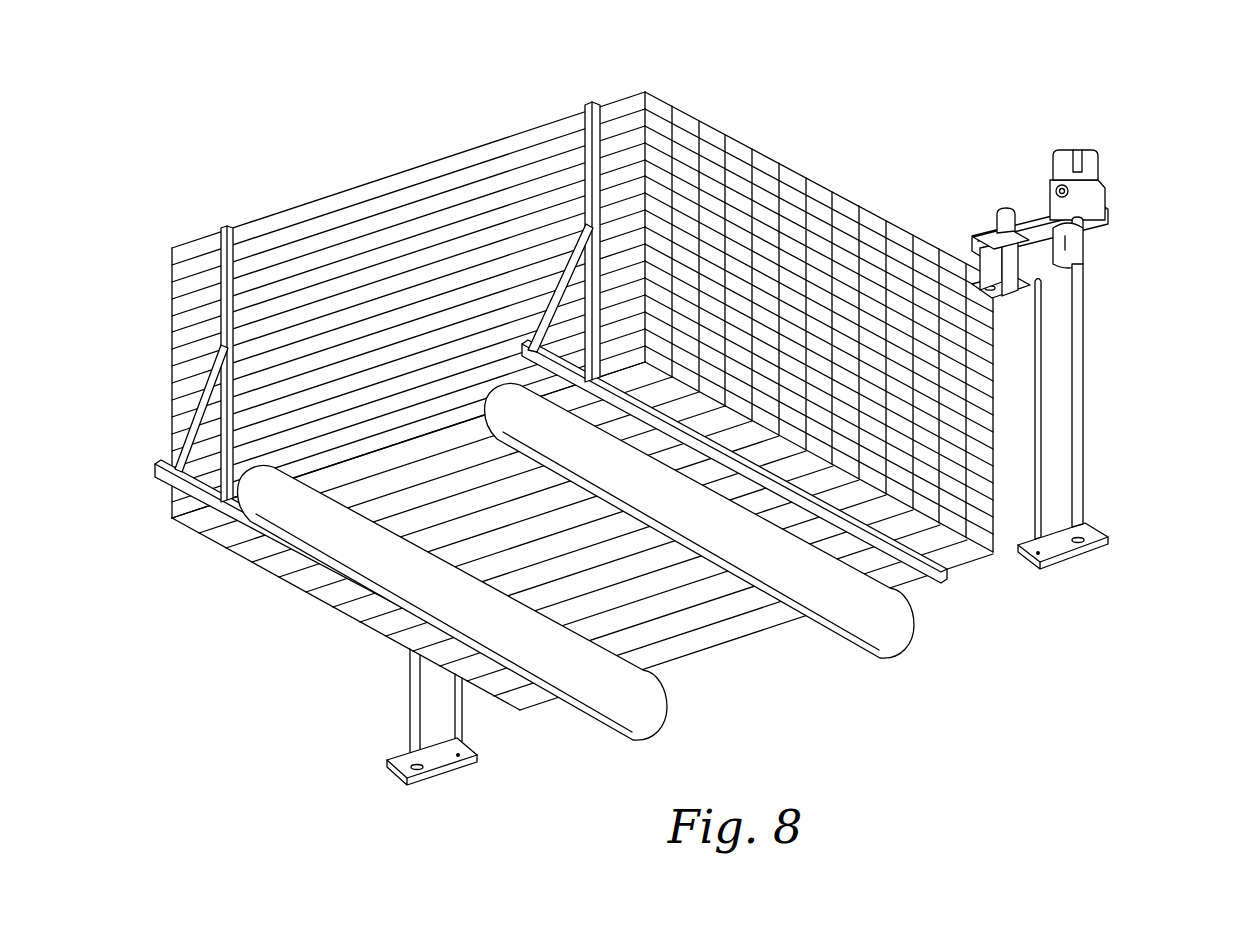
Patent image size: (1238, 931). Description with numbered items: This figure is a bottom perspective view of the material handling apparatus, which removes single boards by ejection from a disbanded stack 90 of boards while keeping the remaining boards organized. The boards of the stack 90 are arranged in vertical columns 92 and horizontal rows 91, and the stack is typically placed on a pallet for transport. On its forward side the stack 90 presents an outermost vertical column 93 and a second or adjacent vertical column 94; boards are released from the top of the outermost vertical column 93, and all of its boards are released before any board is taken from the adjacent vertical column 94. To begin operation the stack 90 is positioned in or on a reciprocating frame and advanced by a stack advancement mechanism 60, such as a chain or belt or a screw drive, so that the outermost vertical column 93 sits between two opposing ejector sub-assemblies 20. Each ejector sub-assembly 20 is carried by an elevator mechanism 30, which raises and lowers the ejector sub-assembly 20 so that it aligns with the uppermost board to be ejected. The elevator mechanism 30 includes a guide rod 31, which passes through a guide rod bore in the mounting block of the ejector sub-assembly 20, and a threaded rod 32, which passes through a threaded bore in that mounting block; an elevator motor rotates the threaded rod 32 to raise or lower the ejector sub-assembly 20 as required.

The disbanded stack 90 is at (557, 362).
The horizontal rows 91 is at (165, 262).
The vertical columns 92 is at (692, 108).
The outermost vertical column 93 is at (965, 555).
The adjacent vertical column 94 is at (944, 227).
The ejector sub-assembly 20 is at (1002, 182).
The elevator mechanism 30 is at (1085, 335).
The guide rod 31 is at (1043, 388).
The threaded rod 32 is at (1085, 440).
The stack advancement mechanism 60 is at (670, 713).